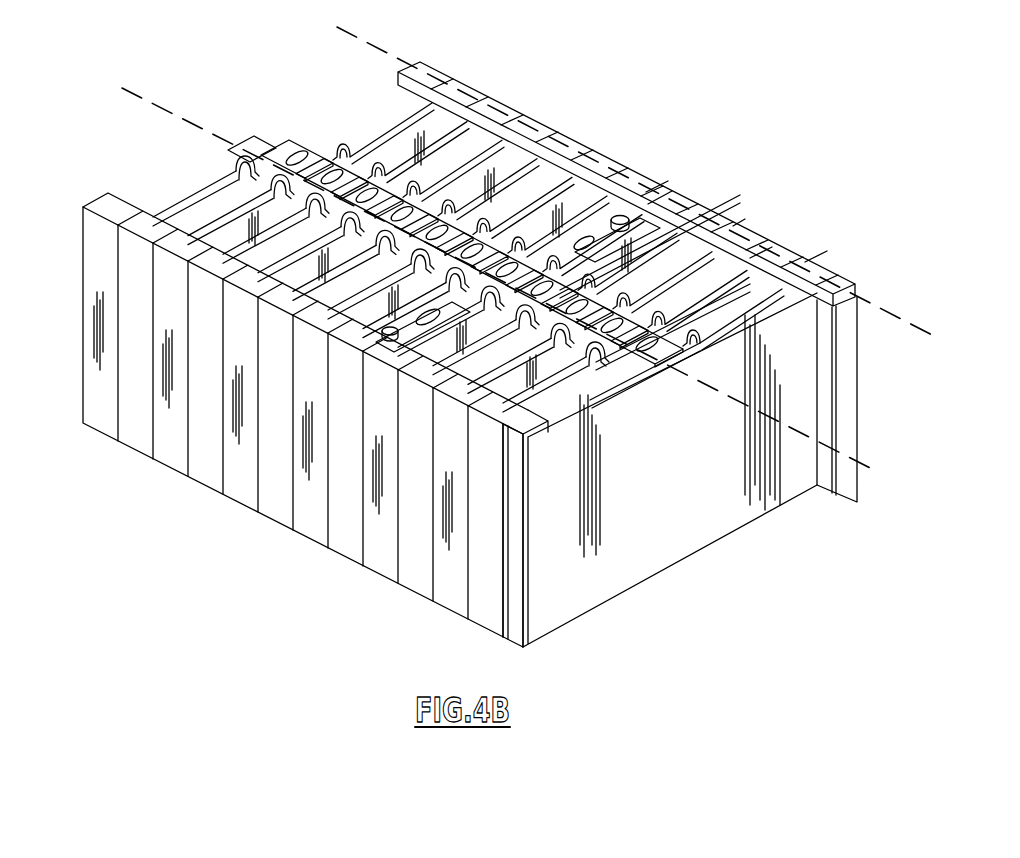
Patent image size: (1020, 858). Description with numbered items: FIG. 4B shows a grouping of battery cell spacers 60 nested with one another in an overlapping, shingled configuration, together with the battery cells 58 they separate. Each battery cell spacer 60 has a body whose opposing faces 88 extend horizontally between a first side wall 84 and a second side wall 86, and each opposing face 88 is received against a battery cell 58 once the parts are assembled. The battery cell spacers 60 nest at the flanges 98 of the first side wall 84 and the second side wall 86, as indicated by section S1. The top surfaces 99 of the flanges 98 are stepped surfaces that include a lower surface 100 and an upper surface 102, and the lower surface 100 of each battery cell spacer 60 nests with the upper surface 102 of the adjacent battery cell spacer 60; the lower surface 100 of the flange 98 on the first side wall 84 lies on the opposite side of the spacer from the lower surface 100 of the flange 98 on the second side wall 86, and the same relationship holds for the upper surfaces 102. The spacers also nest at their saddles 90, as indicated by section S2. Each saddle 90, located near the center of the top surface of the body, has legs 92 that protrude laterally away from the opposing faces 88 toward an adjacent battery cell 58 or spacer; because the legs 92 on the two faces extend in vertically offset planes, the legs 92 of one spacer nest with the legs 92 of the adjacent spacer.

The battery cell 58 is at (600, 222).
The battery cell spacer 60 is at (478, 157).
The first side wall 84 is at (485, 547).
The second side wall 86 is at (853, 285).
The opposing face 88 is at (694, 490).
The saddle 90 is at (325, 160).
The leg 92 is at (700, 318).
The flange 98 is at (736, 222).
The top surface of flange 99 is at (551, 127).
The lower surface 100 is at (652, 206).
The upper surface 102 is at (652, 186).
The section S1 is at (372, 42).
The section S2 is at (160, 92).